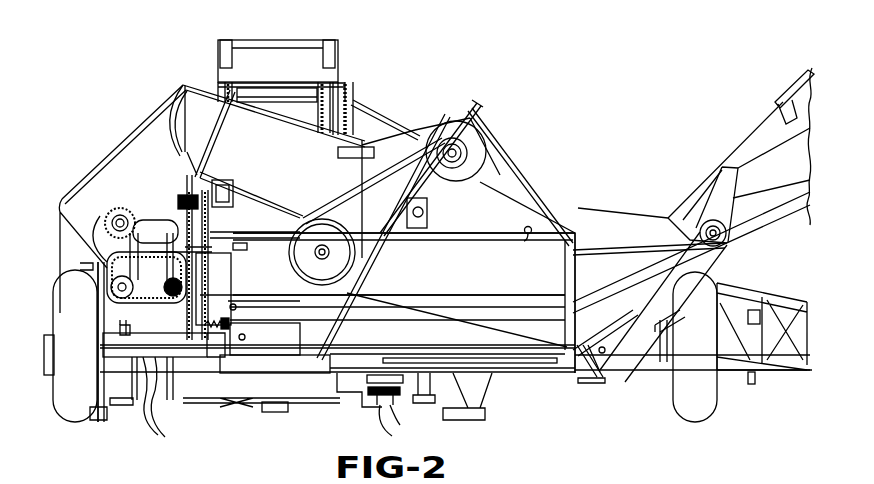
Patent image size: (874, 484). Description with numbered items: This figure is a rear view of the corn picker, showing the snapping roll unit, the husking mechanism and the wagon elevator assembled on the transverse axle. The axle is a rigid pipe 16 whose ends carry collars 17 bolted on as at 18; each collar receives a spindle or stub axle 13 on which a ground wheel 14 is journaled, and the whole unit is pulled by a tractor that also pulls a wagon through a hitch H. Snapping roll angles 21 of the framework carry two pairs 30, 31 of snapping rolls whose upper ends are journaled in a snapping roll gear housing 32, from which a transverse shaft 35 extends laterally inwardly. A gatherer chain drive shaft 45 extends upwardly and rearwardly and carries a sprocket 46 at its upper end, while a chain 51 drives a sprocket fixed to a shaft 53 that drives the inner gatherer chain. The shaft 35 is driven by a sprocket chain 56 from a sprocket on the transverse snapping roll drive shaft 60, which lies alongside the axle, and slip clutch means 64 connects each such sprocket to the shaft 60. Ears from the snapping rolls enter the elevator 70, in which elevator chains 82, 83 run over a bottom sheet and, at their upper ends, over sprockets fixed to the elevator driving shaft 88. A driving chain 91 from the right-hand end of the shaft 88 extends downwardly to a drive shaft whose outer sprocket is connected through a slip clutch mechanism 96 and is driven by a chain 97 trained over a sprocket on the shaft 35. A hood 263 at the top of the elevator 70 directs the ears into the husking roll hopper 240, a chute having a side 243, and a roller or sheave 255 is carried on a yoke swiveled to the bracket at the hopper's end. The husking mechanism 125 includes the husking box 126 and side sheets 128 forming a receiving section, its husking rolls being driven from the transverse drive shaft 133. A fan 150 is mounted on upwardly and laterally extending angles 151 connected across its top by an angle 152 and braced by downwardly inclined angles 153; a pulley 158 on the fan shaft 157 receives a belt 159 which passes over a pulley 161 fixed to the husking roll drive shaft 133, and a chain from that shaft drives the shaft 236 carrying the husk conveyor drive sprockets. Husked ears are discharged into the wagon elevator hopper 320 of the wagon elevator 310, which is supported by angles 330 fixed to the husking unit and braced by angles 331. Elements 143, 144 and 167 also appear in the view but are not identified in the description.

The elevator 70 is at (299, 38).
The hood 263 is at (266, 48).
The husking roll hopper 240 is at (199, 78).
The elevator chain 82 is at (230, 84).
The elevator chain 83 is at (320, 85).
The elevator driving shaft 88 is at (354, 95).
The driving chain 91 is at (358, 104).
The side of hopper 243 is at (279, 136).
The side sheets 128 is at (368, 170).
The fan 150 is at (441, 110).
The angle 152 is at (478, 100).
The pulley 158 is at (445, 120).
The fan shaft 157 is at (462, 150).
The husking mechanism 125 is at (527, 191).
The downwardly inclined angles 153 is at (526, 196).
The belt 159 is at (331, 203).
The pulley 161 is at (330, 236).
The angles 151 is at (405, 187).
The frame plate 144 is at (420, 216).
The pin 143 is at (529, 242).
The husking box 126 is at (495, 308).
The transverse drive shaft 133 is at (327, 257).
The shaft 236 is at (238, 307).
The transverse snapping roll drive shaft 60 is at (240, 328).
The sprocket chain 56 is at (213, 289).
The shaft 53 is at (186, 294).
The chain 97 is at (178, 202).
The transverse shaft 35 is at (232, 227).
The roller or sheave 255 is at (222, 195).
The slip clutch mechanism 96 is at (185, 190).
The drive shaft 45 is at (119, 208).
The shaft 32 is at (143, 224).
The sprocket 46 is at (106, 232).
The snapping roll angles 21 is at (155, 250).
The chain 51 is at (103, 293).
The ground wheel 14 is at (60, 311).
The spindle 13 is at (52, 342).
The bolts 18 is at (122, 332).
The pipe 16 is at (141, 355).
The collars 17 is at (112, 358).
The slip clutch means 64 is at (207, 332).
The pair of snapping rolls 31 is at (152, 398).
The pair of snapping rolls 30 is at (386, 407).
The wagon elevator 310 is at (785, 86).
The wagon elevator hopper 320 is at (638, 205).
The angles 331 is at (627, 248).
The truss 167 is at (727, 300).
The angles 330 is at (612, 333).
The hitch H is at (789, 373).